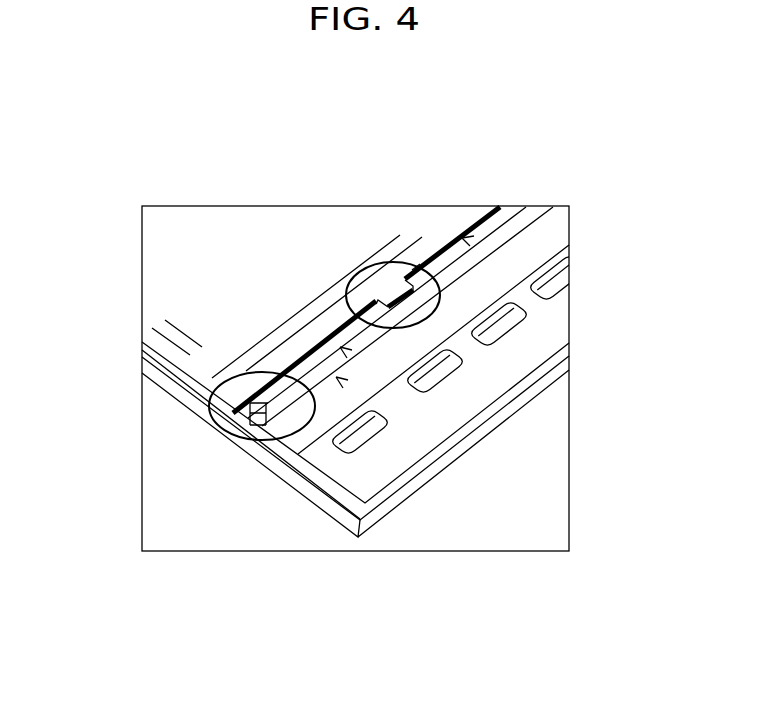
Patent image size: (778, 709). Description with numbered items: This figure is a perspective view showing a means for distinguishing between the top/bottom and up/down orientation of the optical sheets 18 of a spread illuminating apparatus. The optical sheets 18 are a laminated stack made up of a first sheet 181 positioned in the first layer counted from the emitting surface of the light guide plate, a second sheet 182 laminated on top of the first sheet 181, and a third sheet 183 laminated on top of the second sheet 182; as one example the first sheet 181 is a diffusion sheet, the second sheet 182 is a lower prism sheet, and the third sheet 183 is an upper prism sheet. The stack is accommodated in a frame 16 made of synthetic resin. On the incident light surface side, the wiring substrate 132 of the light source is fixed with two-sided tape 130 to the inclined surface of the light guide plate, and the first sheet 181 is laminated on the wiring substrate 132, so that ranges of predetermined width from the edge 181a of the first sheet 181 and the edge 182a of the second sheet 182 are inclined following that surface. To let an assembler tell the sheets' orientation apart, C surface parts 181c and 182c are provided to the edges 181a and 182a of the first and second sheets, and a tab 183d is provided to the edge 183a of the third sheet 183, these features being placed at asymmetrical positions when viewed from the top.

The frame 16 is at (300, 492).
The optical sheets 18 is at (602, 148).
The two-sided tape 130 is at (503, 405).
The wiring substrate 132 is at (550, 330).
The first sheet 181 is at (532, 215).
The edge of the first sheet 181a is at (336, 377).
The C surface part 181c is at (262, 420).
The second sheet 182 is at (507, 210).
The edge of the second sheet 182a is at (340, 347).
The C surface part 182c is at (250, 420).
The third sheet 183 is at (427, 213).
The edge of the third sheet 183a is at (462, 238).
The tab 183d is at (412, 270).